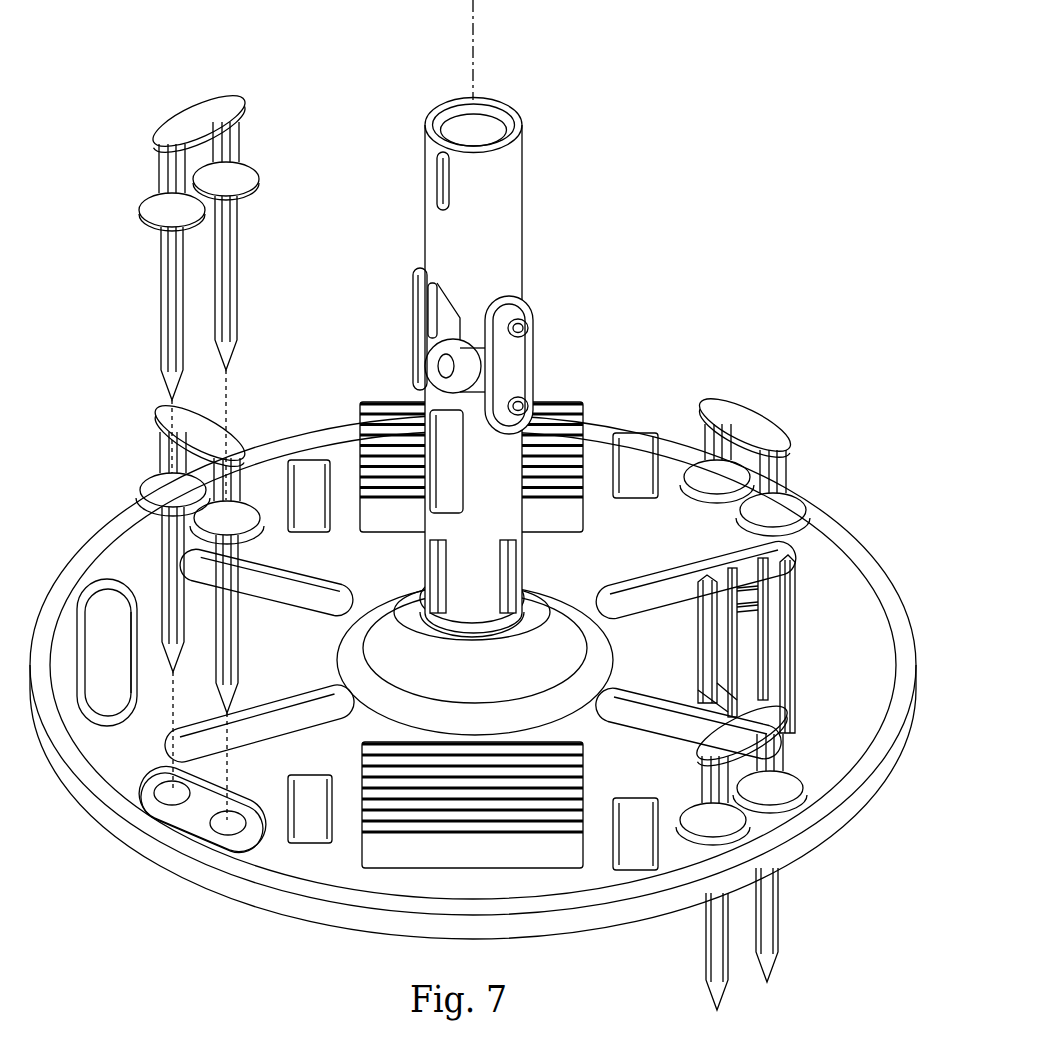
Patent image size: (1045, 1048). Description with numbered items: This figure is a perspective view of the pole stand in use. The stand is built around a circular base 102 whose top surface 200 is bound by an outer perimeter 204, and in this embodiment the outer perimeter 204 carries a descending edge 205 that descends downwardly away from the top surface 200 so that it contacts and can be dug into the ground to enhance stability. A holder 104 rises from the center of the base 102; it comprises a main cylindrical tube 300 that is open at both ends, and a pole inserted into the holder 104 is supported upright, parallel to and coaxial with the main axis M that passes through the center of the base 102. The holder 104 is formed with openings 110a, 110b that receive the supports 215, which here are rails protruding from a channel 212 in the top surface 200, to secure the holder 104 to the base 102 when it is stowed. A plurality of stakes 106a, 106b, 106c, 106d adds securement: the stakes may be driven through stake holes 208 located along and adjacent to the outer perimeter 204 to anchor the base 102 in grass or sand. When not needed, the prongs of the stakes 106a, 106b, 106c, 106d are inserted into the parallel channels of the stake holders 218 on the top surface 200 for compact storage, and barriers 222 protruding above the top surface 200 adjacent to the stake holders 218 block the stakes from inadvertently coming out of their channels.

The main axis M is at (484, 44).
The holder 104 is at (464, 366).
The main cylindrical tube 300 is at (512, 234).
The opening 110a is at (418, 309).
The opening 110b is at (438, 436).
The stake holder 218 is at (545, 408).
The first stake 106a is at (192, 117).
The second stake 106b is at (163, 417).
The stake 106c is at (727, 404).
The stake 106d is at (795, 752).
The channel 212 is at (777, 580).
The supports 215 is at (823, 598).
The base 102 is at (850, 570).
The top surface 200 is at (483, 699).
The outer perimeter 204 is at (120, 827).
The descending edge 205 is at (815, 846).
The stake hole 208 is at (232, 834).
The barrier 222 is at (306, 832).